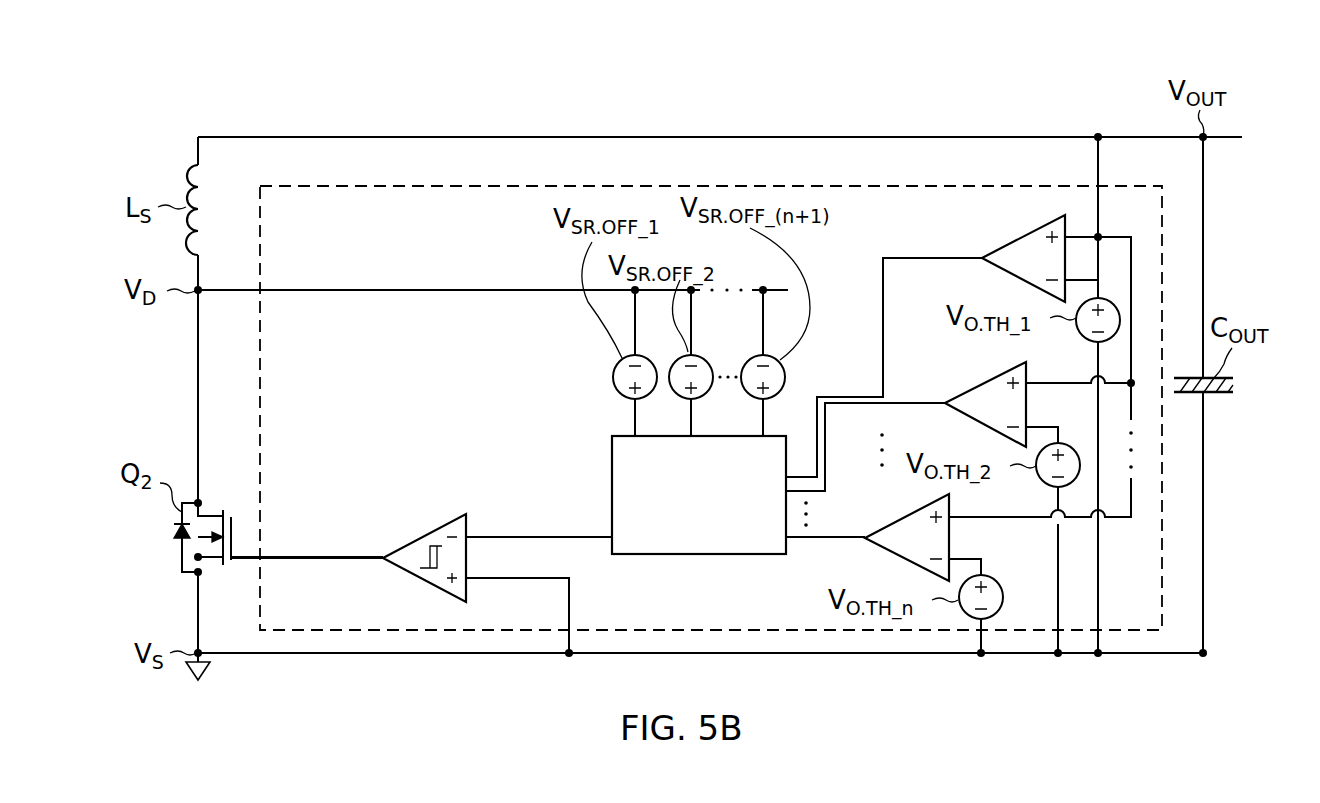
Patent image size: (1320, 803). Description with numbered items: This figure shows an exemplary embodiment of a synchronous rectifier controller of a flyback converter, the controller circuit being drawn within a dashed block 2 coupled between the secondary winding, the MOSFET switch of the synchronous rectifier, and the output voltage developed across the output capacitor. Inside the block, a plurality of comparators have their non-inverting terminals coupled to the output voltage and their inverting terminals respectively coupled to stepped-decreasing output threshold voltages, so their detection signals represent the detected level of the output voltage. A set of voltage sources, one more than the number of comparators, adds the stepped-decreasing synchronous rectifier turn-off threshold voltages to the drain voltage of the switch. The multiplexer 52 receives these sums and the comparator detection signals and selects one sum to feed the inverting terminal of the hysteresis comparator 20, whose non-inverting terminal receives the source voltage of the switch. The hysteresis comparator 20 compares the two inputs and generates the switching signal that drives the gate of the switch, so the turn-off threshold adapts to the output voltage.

The synchronous rectifier control circuit 2 is at (263, 187).
The hysteresis comparator 20 is at (427, 584).
The multiplexer 52 is at (698, 556).